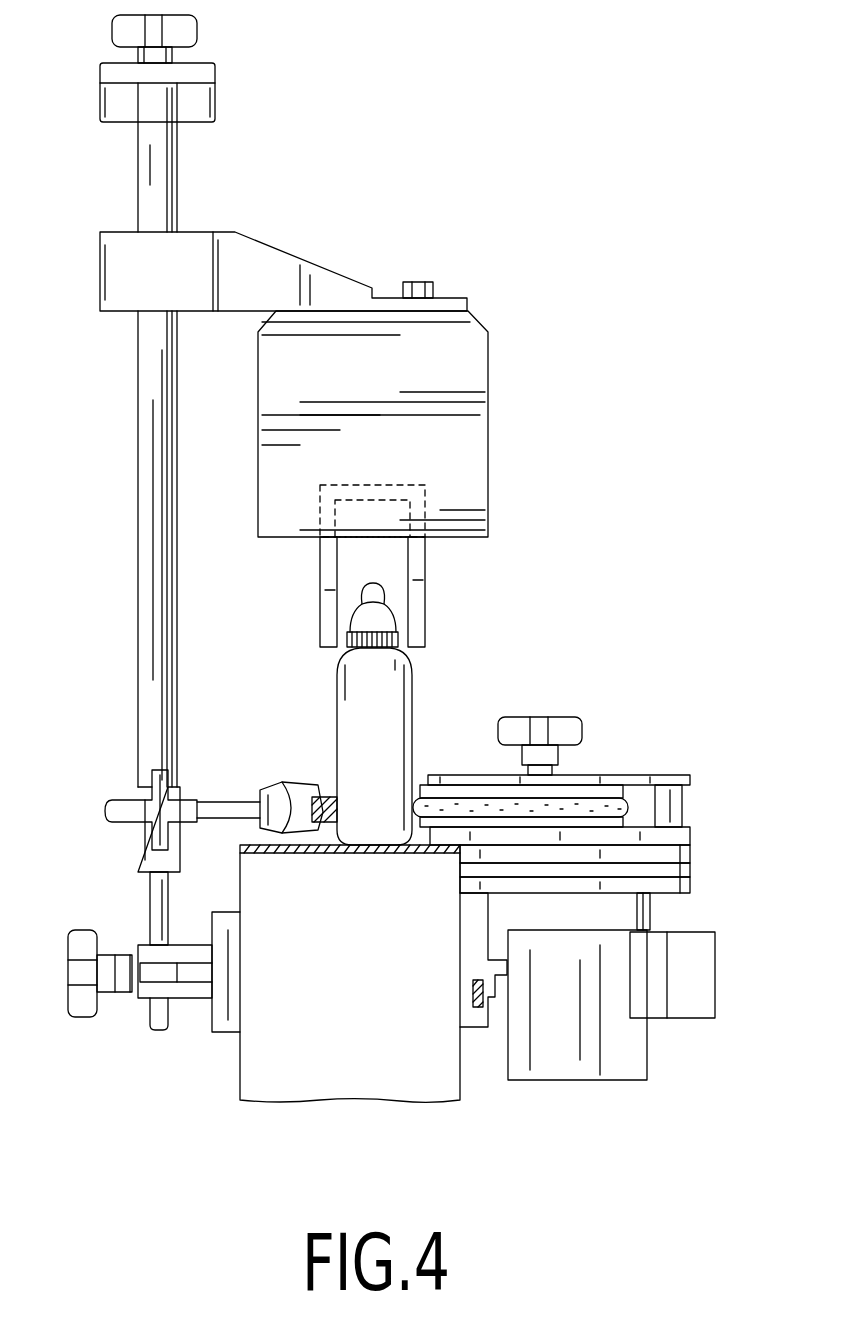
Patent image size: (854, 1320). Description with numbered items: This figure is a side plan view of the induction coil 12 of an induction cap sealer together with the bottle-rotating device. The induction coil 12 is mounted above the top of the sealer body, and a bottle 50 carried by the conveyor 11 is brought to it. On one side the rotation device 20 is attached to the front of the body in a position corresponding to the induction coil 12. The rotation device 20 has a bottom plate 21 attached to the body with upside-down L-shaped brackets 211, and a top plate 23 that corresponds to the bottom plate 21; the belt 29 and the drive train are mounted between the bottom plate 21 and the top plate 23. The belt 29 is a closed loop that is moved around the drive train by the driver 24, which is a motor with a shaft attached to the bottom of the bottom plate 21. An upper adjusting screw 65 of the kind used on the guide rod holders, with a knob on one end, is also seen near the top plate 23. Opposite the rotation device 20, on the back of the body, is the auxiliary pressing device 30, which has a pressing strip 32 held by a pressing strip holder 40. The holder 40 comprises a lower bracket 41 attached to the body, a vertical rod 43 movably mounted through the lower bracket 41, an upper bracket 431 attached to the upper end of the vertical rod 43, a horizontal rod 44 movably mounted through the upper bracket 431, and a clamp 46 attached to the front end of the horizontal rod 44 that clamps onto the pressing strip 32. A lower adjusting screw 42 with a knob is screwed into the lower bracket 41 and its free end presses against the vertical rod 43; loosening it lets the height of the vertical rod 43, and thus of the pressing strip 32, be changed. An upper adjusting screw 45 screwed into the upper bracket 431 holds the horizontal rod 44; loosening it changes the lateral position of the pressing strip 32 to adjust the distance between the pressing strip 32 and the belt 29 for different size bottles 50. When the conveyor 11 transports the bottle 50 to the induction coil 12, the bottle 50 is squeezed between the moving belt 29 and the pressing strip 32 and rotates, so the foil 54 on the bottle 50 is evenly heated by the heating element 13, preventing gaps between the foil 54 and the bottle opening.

The conveyor 11 is at (417, 855).
The induction coil 12 is at (458, 430).
The heating element 13 is at (417, 553).
The rotation device 20 is at (571, 872).
The bottom plate 21 is at (673, 835).
The top plate 23 is at (665, 778).
The driver 24 is at (613, 1030).
The belt 29 is at (590, 807).
The auxiliary pressing device 30 is at (307, 796).
The pressing strip 32 is at (335, 822).
The pressing strip holder 40 is at (251, 893).
The lower bracket 41 is at (222, 1007).
The lower adjusting screw 42 is at (83, 975).
The vertical rod 43 is at (158, 913).
The upper bracket 431 is at (148, 857).
The horizontal rod 44 is at (232, 812).
The upper adjusting screw 45 is at (143, 798).
The clamp 46 is at (277, 792).
The bottle 50 is at (372, 708).
The foil 54 is at (397, 637).
The upper adjusting screw 65 is at (526, 727).
The upside-down L-shaped bracket 211 is at (485, 932).